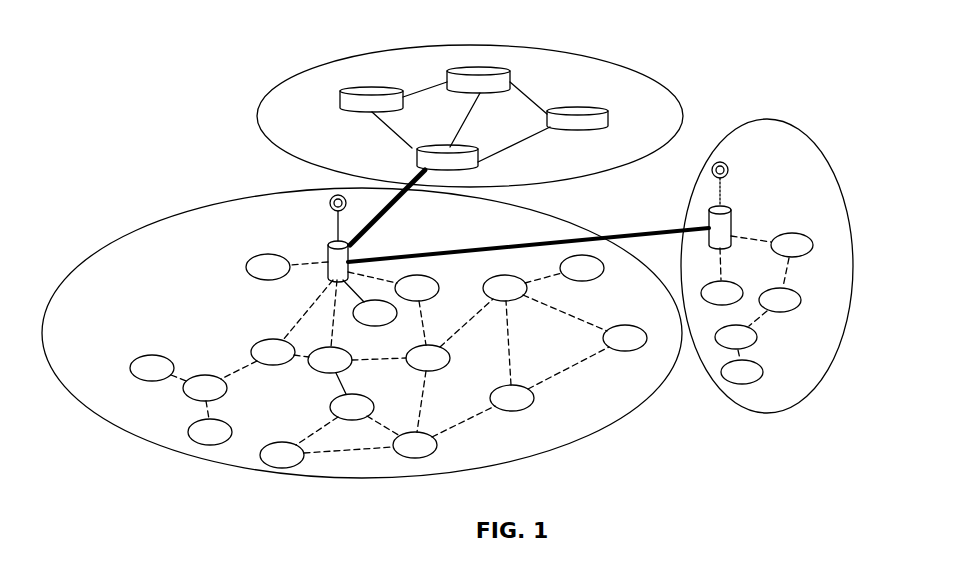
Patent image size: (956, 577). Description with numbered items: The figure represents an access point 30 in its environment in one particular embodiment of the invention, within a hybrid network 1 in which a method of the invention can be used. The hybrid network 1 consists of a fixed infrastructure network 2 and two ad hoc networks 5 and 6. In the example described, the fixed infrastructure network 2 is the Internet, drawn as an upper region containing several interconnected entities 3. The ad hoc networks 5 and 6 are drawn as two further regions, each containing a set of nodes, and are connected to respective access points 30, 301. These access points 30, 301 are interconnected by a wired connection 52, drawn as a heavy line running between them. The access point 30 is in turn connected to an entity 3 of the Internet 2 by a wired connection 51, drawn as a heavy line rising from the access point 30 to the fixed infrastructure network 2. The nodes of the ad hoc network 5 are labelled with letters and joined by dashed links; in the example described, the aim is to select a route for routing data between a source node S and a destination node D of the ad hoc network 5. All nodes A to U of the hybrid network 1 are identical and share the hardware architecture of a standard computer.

The hybrid network 1 is at (447, 280).
The fixed infrastructure network 2 is at (486, 116).
The entity 3 is at (382, 88).
The ad hoc network 5 is at (362, 351).
The ad hoc network 6 is at (767, 266).
The access point 30 is at (327, 249).
The access point 301 is at (731, 226).
The wired connection 51 is at (396, 197).
The wired connection 52 is at (513, 242).